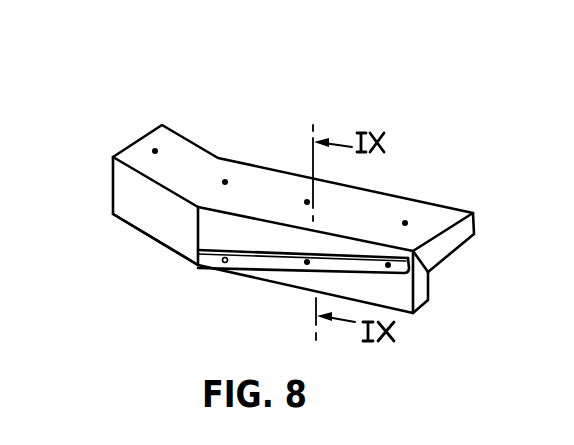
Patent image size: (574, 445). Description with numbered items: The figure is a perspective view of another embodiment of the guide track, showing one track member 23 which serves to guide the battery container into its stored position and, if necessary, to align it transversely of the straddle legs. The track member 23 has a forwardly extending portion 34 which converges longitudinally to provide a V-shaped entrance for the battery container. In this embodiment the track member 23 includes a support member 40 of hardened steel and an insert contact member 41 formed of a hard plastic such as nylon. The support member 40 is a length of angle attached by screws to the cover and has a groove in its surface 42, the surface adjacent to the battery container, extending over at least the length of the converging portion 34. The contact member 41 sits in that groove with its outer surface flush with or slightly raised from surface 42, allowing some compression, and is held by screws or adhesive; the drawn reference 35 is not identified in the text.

The track member 23 is at (297, 236).
The forwardly extending portion 34 is at (297, 289).
The angled end portion 35 is at (162, 245).
The support member 40 is at (422, 284).
The insert contact member 41 is at (237, 261).
The surface 42 is at (124, 190).